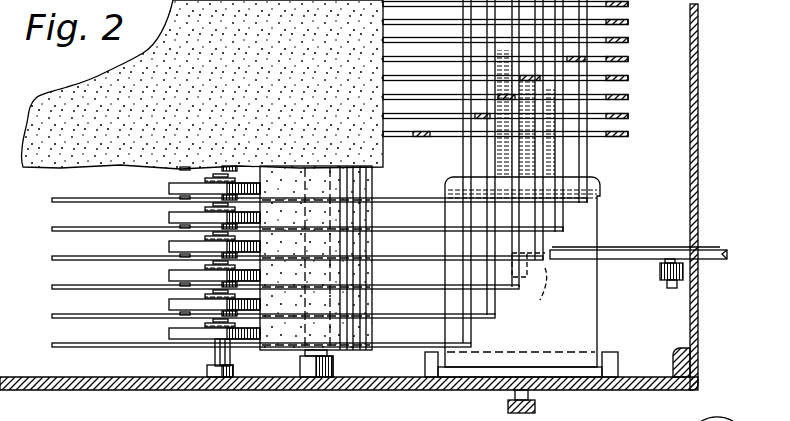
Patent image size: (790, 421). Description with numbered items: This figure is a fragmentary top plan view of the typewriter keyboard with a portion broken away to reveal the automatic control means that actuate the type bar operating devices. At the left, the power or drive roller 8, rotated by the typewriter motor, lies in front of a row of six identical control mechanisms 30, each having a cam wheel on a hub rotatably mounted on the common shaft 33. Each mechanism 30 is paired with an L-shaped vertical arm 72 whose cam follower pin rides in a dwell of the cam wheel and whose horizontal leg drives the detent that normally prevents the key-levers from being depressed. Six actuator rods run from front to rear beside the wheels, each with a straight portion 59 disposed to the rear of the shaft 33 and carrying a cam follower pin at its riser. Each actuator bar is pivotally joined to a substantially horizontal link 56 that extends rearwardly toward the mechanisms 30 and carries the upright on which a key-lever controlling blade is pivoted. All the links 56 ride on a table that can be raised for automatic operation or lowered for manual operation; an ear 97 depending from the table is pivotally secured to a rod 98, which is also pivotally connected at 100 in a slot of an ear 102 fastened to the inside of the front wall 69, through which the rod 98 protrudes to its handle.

The power or drive roller 8 is at (293, 332).
The control mechanism 30 is at (167, 350).
The common shaft 33 is at (213, 355).
The link 56 is at (416, 348).
The straight portion of actuator bar 59 is at (95, 350).
The front wall 69 is at (695, 195).
The vertical arm 72 is at (200, 332).
The ear 97 is at (541, 282).
The rod 98 is at (643, 257).
The pivotal connection 100 is at (672, 288).
The ear 102 is at (663, 278).